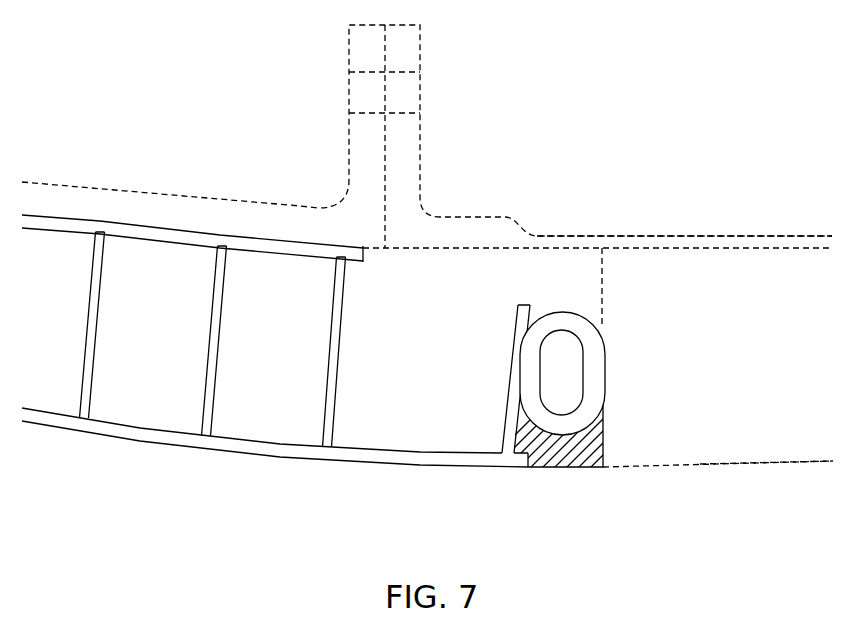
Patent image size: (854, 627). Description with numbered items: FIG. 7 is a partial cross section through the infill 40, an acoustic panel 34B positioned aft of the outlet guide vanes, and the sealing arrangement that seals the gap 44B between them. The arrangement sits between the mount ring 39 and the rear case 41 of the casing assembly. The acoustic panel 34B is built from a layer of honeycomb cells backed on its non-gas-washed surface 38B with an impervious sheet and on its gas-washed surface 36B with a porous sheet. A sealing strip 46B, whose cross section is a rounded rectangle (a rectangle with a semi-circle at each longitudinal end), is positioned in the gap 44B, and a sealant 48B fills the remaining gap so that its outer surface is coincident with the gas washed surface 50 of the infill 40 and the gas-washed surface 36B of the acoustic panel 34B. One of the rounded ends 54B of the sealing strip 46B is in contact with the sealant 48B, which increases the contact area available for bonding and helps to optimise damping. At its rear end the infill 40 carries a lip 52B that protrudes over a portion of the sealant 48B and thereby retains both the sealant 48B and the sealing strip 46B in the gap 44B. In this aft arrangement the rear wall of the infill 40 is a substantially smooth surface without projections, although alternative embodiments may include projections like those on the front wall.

The mount ring 39 is at (127, 193).
The infill 40 is at (42, 398).
The gas washed surface 50 is at (140, 445).
The non-gas-washed surface 38B is at (708, 248).
The rear case 41 is at (777, 236).
The acoustic panel 34B is at (747, 428).
The gas-washed surface 36B is at (787, 465).
The gap 44B is at (545, 352).
The sealing strip 46B is at (567, 320).
The sealant 48B is at (578, 460).
The lip 52B is at (520, 462).
The rounded end 54B is at (557, 455).